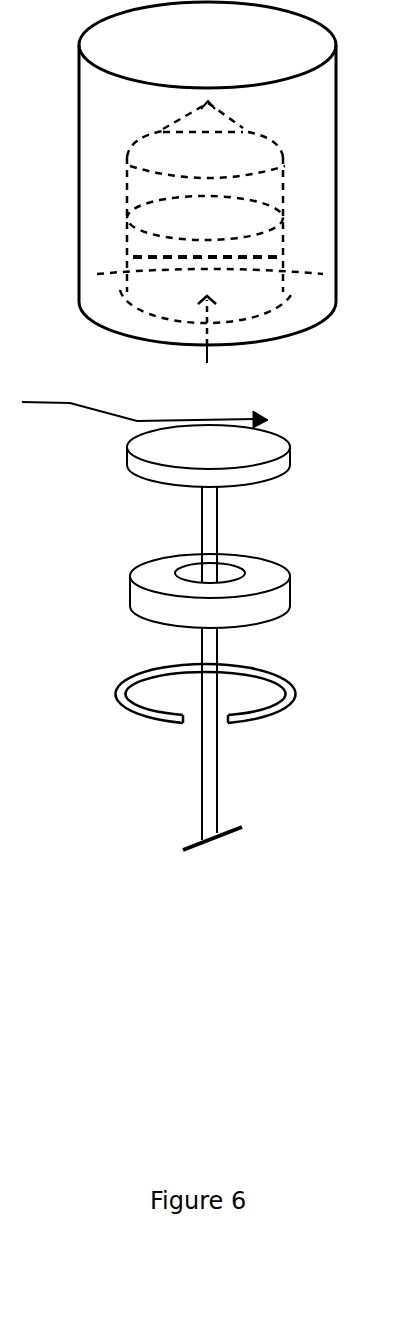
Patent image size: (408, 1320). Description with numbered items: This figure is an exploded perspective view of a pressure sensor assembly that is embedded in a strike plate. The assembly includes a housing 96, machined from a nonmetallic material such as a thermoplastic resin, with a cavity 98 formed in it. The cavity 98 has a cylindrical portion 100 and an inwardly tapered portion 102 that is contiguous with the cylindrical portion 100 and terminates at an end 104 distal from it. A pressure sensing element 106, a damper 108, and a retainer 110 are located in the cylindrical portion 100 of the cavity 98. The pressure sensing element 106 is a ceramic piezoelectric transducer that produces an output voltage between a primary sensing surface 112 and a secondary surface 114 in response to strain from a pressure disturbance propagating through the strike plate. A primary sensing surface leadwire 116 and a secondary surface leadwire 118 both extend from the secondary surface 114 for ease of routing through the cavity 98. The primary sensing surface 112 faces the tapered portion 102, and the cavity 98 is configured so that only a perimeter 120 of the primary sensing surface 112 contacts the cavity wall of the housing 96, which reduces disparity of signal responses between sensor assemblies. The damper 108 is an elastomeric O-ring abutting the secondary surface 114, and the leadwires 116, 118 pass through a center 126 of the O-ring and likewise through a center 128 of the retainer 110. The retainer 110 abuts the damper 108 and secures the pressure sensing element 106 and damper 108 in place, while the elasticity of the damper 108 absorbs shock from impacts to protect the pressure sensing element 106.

The housing 96 is at (207, 173).
The cavity 98 is at (208, 345).
The cylindrical portion 100 is at (211, 240).
The inwardly tapered portion 102 is at (208, 131).
The end 104 is at (203, 100).
The pressure sensing element 106 is at (180, 456).
The damper 108 is at (183, 591).
The retainer 110 is at (181, 693).
The primary sensing surface 112 is at (281, 414).
The secondary surface 114 is at (283, 495).
The primary sensing surface leadwire 116 is at (195, 668).
The secondary surface leadwire 118 is at (245, 660).
The perimeter 120 is at (143, 401).
The center of O-ring 126 is at (228, 575).
The center of retainer 128 is at (232, 695).